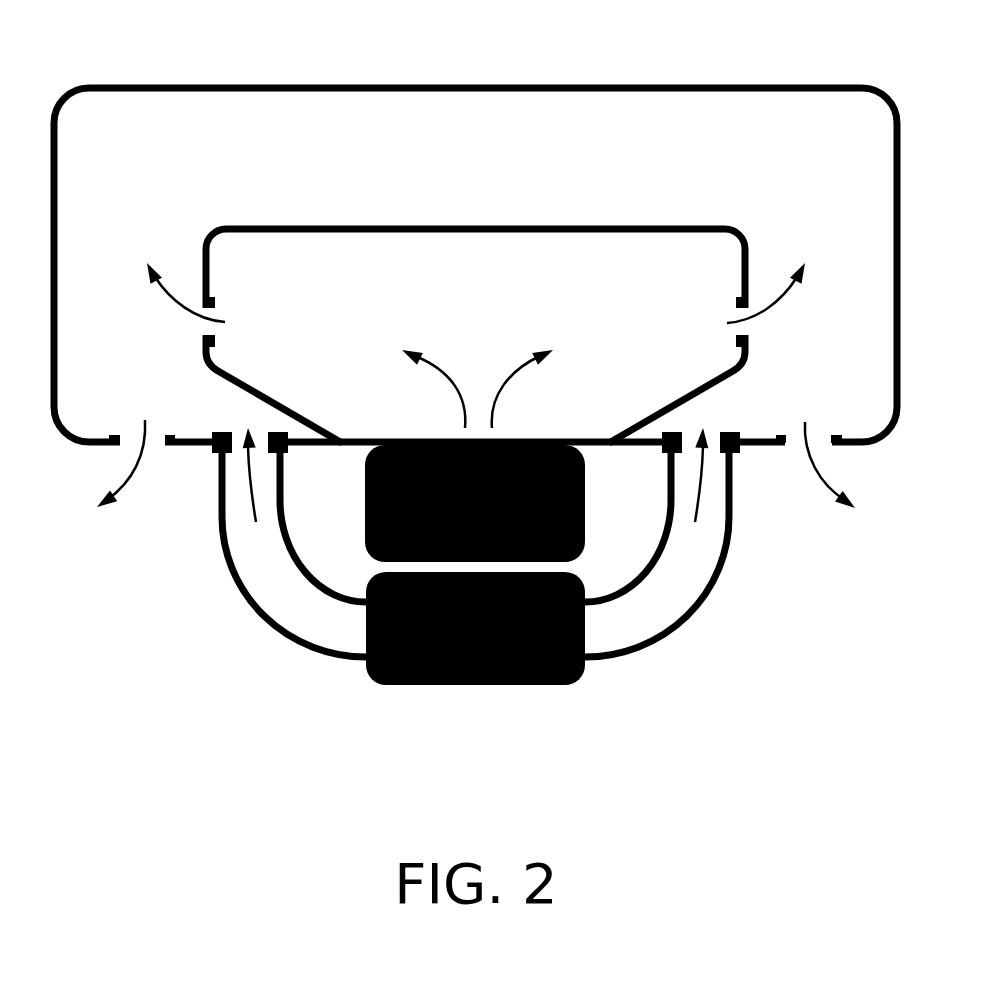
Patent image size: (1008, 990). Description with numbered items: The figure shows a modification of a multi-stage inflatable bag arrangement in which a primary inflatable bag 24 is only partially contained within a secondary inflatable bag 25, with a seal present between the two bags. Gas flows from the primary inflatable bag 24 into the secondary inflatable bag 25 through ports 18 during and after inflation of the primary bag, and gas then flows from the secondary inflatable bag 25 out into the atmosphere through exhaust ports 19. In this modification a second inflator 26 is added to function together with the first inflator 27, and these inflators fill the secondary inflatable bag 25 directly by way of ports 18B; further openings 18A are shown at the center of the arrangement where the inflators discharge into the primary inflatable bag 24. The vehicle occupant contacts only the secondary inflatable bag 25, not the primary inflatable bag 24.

The secondary inflatable bag 25 is at (650, 86).
The primary inflatable bag 24 is at (553, 226).
The ports 18 is at (737, 320).
The center air outlet opening 18A is at (520, 422).
The ports 18B is at (727, 412).
The exhaust ports 19 is at (128, 434).
The first inflator 27 is at (586, 520).
The second inflator 26 is at (425, 686).